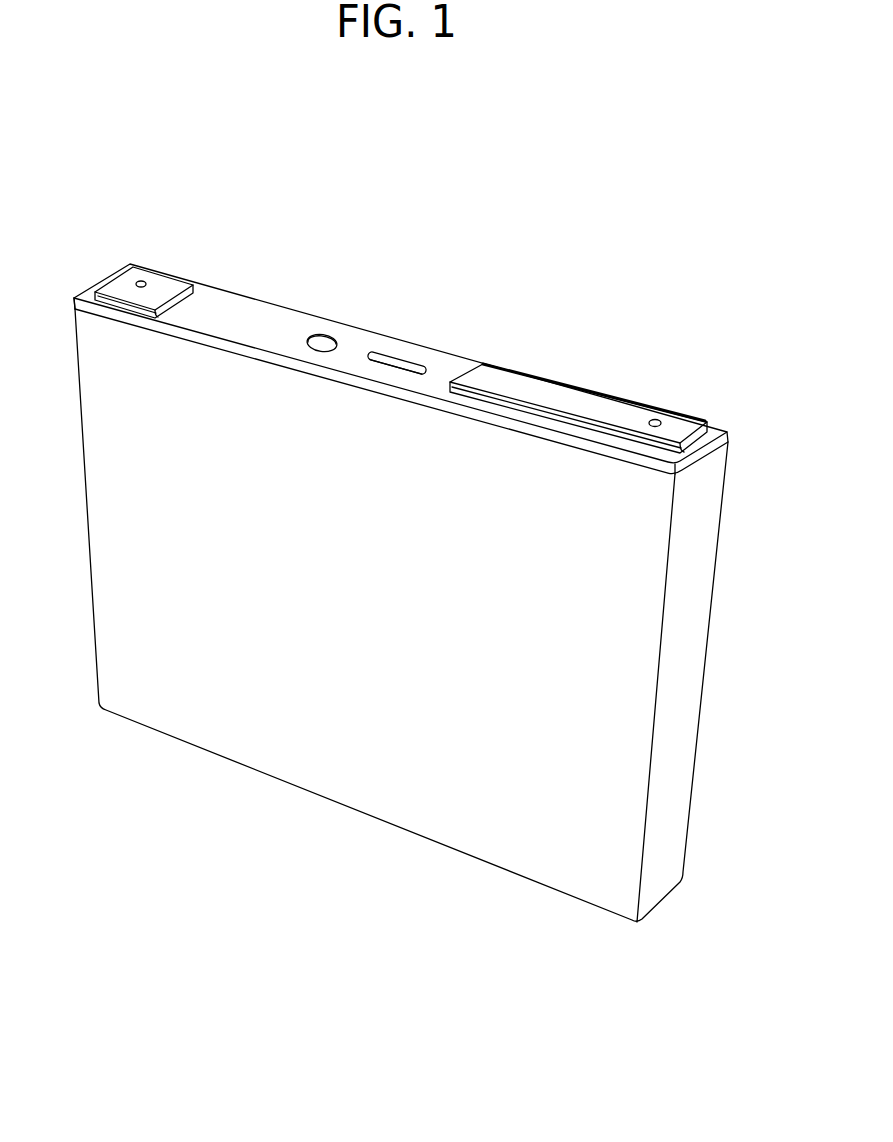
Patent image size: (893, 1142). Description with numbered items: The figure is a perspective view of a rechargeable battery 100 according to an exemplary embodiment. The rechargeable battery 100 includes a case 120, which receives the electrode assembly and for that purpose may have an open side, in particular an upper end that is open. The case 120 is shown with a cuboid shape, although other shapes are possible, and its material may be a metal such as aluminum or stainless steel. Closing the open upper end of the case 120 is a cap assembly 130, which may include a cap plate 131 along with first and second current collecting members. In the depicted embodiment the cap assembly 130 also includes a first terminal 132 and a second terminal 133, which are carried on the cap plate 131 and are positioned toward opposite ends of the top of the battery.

The rechargeable battery 100 is at (417, 539).
The case 120 is at (682, 693).
The cap assembly 130 is at (401, 349).
The cap plate 131 is at (360, 340).
The first terminal 132 is at (163, 285).
The second terminal 133 is at (533, 392).